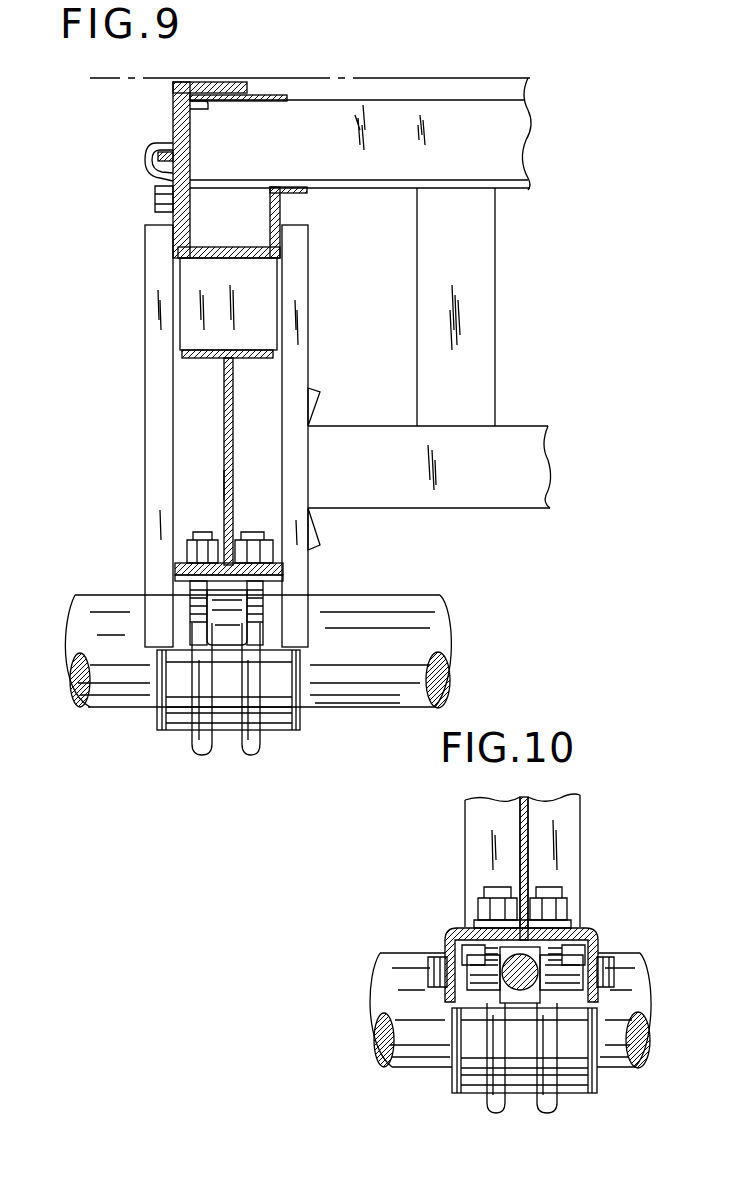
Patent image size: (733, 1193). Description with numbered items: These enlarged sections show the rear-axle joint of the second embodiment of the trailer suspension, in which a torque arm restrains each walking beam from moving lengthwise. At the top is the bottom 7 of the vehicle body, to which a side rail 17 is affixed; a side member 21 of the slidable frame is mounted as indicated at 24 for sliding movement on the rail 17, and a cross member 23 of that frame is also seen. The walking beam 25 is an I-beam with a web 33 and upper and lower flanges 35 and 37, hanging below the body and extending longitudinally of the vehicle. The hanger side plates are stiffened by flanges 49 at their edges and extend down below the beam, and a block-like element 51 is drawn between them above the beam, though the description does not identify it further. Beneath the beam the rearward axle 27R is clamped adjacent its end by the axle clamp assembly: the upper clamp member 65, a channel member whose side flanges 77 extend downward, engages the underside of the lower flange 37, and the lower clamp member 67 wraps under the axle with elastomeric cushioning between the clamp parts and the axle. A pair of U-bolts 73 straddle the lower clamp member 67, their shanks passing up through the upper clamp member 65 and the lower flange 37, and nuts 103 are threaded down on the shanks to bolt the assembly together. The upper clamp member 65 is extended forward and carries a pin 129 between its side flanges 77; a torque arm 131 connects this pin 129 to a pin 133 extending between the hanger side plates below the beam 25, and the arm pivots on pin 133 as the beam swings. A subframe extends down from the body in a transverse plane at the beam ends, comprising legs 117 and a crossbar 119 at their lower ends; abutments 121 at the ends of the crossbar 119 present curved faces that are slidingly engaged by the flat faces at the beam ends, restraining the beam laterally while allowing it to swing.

In FIG. 9, the bottom of the body 7 is at (424, 68).
In FIG. 9, the side rail 17 is at (173, 115).
In FIG. 9, the side member 21 is at (300, 195).
In FIG. 9, the cross member 23 is at (510, 160).
In FIG. 9, the sliding mounting 24 is at (145, 160).
In FIG. 9, the walking beam 25 is at (222, 440).
In FIG. 10, the walking beam 25 is at (518, 826).
In FIG. 9, the rearward axle 27R is at (360, 705).
In FIG. 10, the rearward axle 27R is at (405, 1068).
In FIG. 9, the web 33 is at (222, 478).
In FIG. 9, the upper flange 35 is at (208, 360).
In FIG. 9, the lower flange 37 is at (178, 568).
In FIG. 9, the flange 49 is at (150, 258).
In FIG. 9, the block 51 is at (205, 302).
In FIG. 10, the upper clamp member 65 is at (598, 928).
In FIG. 9, the lower clamp member 67 is at (178, 740).
In FIG. 10, the lower clamp member 67 is at (455, 1103).
In FIG. 9, the U-bolt 73 is at (252, 758).
In FIG. 10, the U-bolt 73 is at (492, 1113).
In FIG. 10, the flange 77 is at (600, 1005).
In FIG. 9, the nut 103 is at (185, 548).
In FIG. 9, the leg 117 is at (485, 305).
In FIG. 9, the crossbar 119 is at (512, 500).
In FIG. 9, the abutment 121 is at (318, 538).
In FIG. 10, the pin 129 is at (615, 972).
In FIG. 10, the torque arm 131 is at (535, 1085).
In FIG. 9, the pin 133 is at (187, 615).